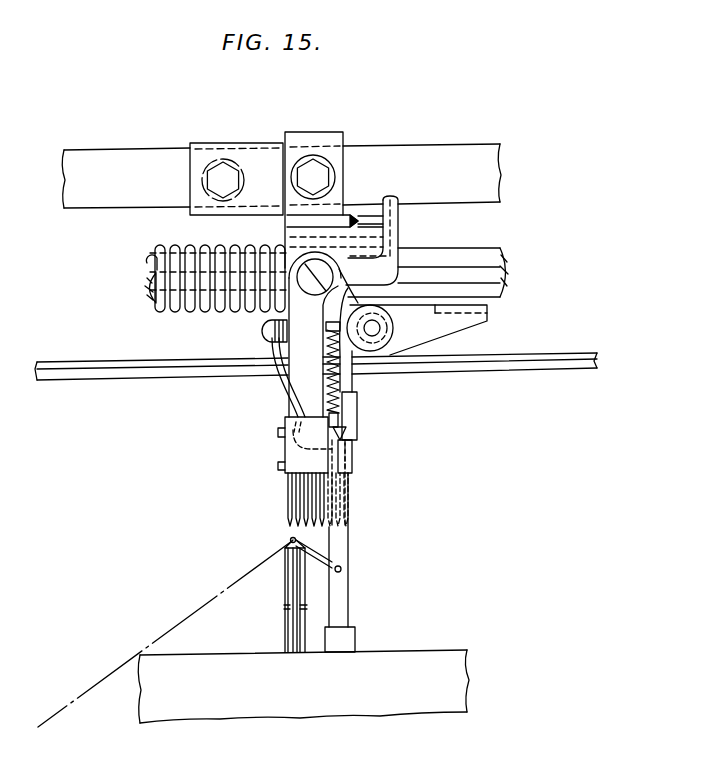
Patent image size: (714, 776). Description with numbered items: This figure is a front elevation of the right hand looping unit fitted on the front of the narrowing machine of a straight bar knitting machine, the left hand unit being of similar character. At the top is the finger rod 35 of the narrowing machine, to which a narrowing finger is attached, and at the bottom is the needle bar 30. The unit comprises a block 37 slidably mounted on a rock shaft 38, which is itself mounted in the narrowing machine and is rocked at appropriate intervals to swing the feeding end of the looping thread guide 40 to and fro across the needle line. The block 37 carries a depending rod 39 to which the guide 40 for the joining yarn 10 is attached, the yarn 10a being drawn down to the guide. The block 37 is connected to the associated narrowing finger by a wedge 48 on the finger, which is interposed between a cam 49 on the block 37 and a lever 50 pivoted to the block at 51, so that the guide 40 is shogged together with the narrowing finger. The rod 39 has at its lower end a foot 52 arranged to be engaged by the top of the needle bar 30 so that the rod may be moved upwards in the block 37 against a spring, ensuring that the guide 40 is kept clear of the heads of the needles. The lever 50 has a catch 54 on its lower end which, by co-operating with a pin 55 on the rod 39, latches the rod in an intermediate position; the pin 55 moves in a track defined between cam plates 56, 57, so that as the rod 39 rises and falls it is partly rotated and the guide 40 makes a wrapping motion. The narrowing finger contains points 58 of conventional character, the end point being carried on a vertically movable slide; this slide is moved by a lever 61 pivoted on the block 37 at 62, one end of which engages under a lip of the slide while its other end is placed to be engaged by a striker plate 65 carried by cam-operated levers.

The conductor 10 is at (300, 584).
The conductor wire 10a is at (285, 577).
The needle bar 30 is at (437, 680).
The finger rod 35 is at (98, 193).
The block 37 is at (288, 404).
The rock shaft 38 is at (492, 263).
The depending rod 39 is at (338, 605).
The looping thread guide 40 is at (333, 558).
The wedge 48 is at (370, 222).
The cam 49 is at (342, 215).
The lever 50 is at (398, 237).
The pivot 51 is at (307, 283).
The foot 52 is at (340, 633).
The catch 54 is at (332, 449).
The pin 55 is at (338, 425).
The cam plate 56 is at (350, 405).
The cam plate 57 is at (352, 460).
The points 58 is at (335, 490).
The lever 61 is at (458, 325).
The pivot 62 is at (387, 353).
The striker plate 65 is at (83, 372).